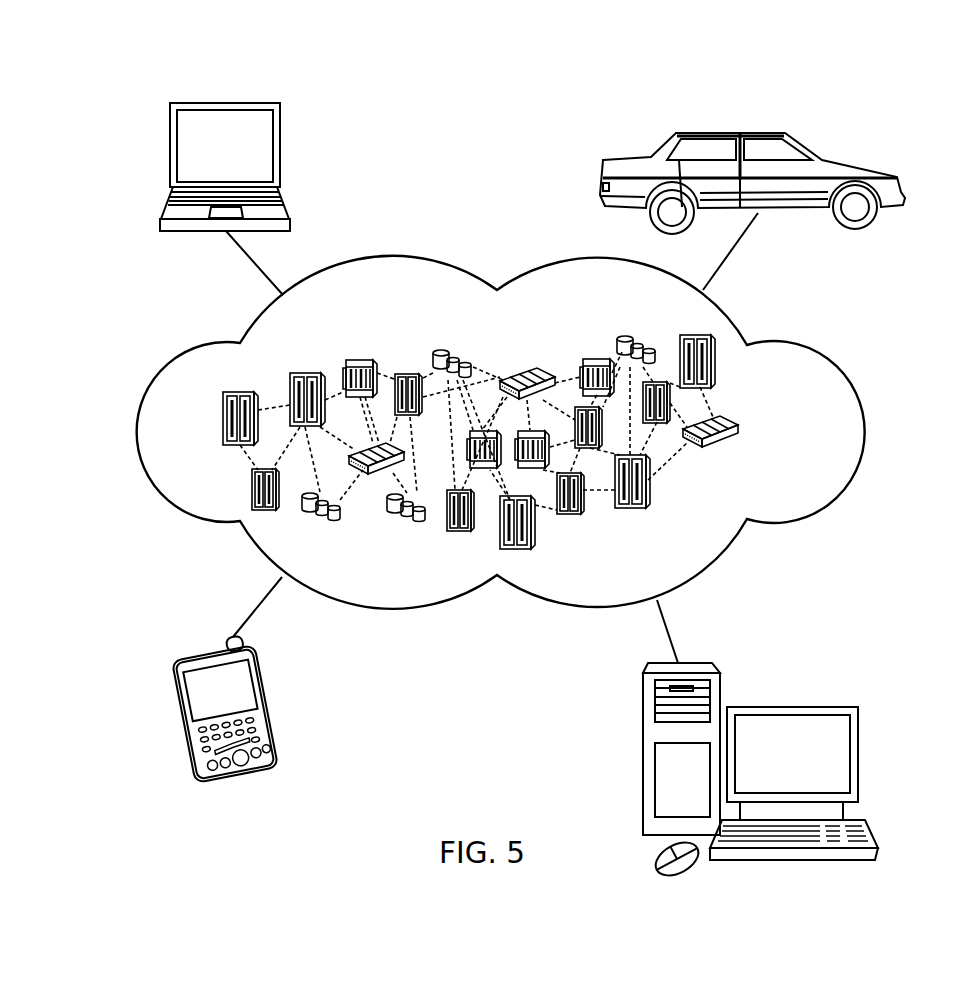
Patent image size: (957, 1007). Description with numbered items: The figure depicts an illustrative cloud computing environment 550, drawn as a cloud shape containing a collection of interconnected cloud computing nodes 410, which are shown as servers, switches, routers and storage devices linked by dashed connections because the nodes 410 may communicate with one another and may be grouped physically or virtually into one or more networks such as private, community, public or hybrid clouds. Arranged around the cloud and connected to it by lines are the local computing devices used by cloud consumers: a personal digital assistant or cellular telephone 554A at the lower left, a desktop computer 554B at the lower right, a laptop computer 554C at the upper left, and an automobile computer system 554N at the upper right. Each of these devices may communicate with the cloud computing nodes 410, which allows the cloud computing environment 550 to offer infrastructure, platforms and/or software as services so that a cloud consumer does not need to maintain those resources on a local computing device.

The cloud computing environment 550 is at (802, 347).
The cloud computing nodes 410 is at (752, 433).
The personal digital assistant (PDA) or cellular telephone 554A is at (207, 648).
The desktop computer 554B is at (793, 703).
The laptop computer 554C is at (224, 103).
The automobile computer system 554N is at (734, 128).